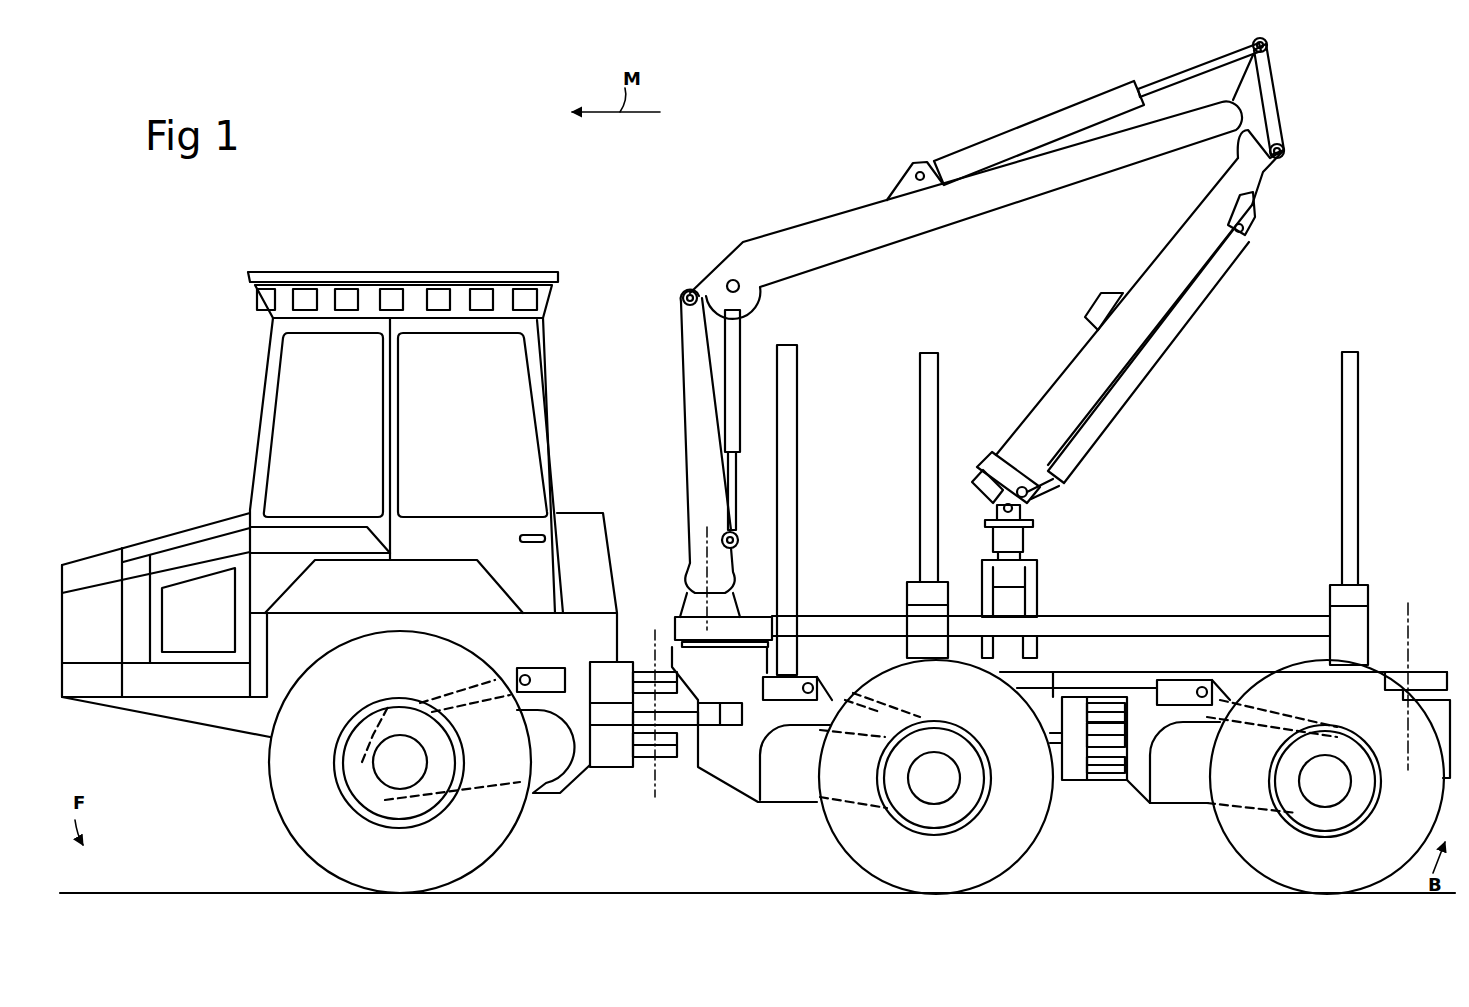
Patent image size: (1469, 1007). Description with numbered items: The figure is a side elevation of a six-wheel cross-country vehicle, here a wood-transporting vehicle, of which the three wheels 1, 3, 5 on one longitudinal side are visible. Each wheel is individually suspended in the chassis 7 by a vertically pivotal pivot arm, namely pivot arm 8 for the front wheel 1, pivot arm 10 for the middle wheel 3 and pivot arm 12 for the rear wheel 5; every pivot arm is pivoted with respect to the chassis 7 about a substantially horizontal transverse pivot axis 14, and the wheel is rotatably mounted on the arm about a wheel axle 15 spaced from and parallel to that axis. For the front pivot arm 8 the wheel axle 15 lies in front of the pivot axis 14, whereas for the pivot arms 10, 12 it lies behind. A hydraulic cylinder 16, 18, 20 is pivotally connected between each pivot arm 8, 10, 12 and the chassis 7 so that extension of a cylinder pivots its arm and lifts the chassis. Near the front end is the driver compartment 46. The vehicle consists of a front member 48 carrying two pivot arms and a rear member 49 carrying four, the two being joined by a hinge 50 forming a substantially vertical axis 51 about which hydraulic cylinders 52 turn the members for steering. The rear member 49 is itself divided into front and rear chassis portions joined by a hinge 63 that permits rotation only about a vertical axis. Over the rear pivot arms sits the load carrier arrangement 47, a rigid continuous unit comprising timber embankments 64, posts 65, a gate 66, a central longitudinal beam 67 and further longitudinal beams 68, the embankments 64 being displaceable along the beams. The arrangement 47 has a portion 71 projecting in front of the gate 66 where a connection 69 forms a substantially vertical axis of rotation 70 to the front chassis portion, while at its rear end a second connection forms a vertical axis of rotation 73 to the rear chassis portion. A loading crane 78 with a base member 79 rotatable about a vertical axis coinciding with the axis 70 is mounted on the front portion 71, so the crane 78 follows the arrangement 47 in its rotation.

The wheel 1 is at (300, 831).
The wheel 3 is at (863, 853).
The wheel 5 is at (1257, 862).
The chassis 7 is at (640, 530).
The pivot arm 8 is at (538, 773).
The pivot arm 10 is at (803, 787).
The pivot arm 12 is at (1195, 787).
The pivot axis 14 is at (797, 760).
The wheel axle 15 is at (1327, 780).
The hydraulic cylinder 16 is at (505, 678).
The hydraulic cylinder 18 is at (833, 697).
The hydraulic cylinder 20 is at (1237, 677).
The driver compartment 46 is at (417, 268).
The load carrier arrangement 47 is at (900, 597).
The front member 48 is at (570, 507).
The rear member 49 is at (705, 829).
The hinge 50 is at (635, 775).
The vertical axis 51 is at (655, 790).
The hydraulic cylinders 52 is at (600, 720).
The hinge 63 is at (1093, 790).
The timber embankments 64 is at (910, 628).
The posts 65 is at (925, 422).
The gate 66 is at (790, 477).
The central longitudinal beam 67 is at (1073, 680).
The longitudinal beams 68 is at (1150, 618).
The connection 69 is at (720, 642).
The axis of rotation 70 is at (705, 547).
The front portion 71 is at (740, 630).
The axis of rotation 73 is at (1410, 627).
The loading crane 78 is at (688, 330).
The base member 79 is at (695, 566).